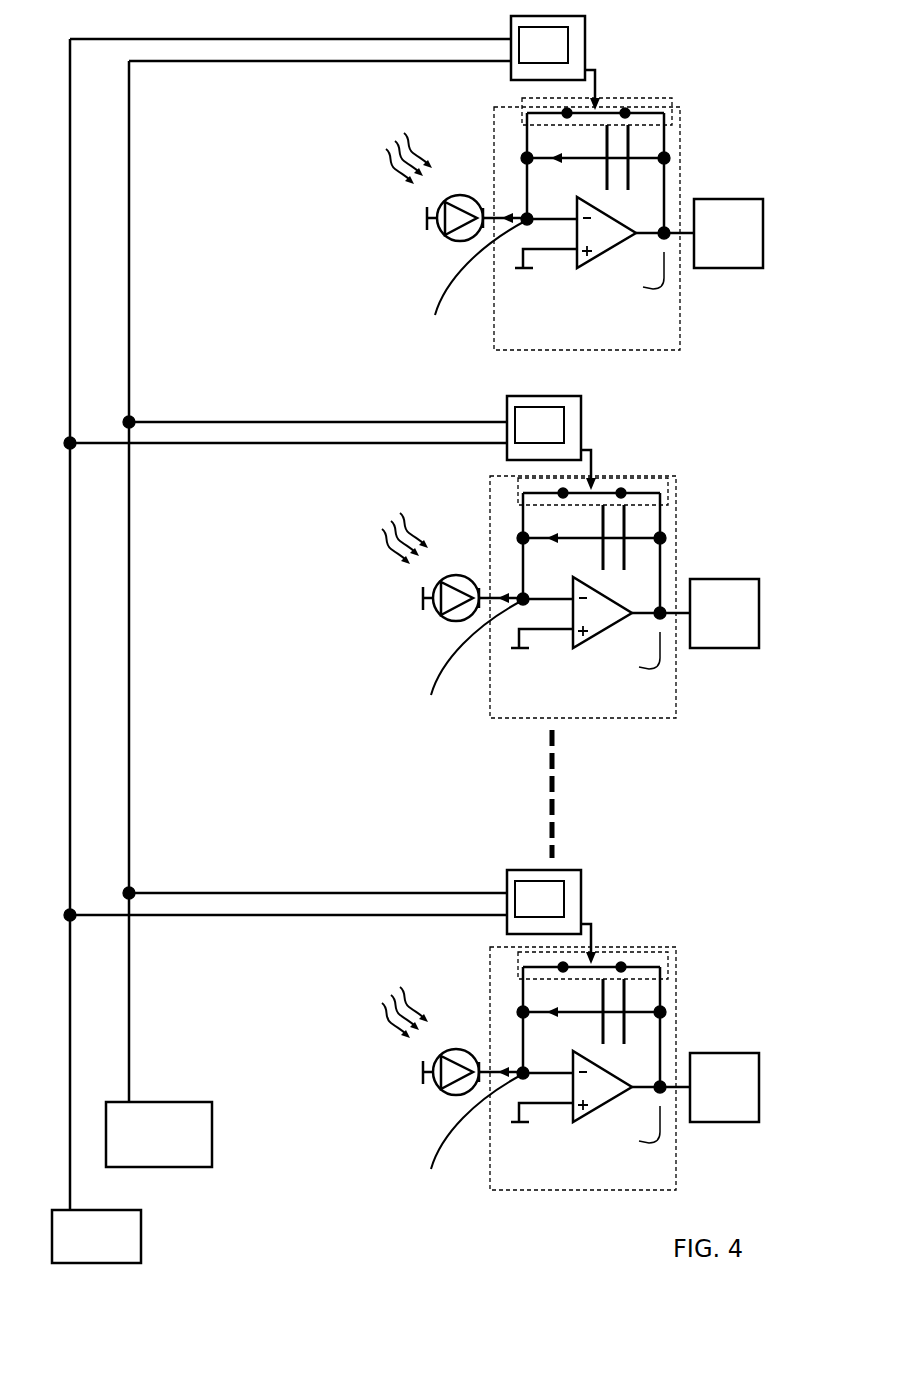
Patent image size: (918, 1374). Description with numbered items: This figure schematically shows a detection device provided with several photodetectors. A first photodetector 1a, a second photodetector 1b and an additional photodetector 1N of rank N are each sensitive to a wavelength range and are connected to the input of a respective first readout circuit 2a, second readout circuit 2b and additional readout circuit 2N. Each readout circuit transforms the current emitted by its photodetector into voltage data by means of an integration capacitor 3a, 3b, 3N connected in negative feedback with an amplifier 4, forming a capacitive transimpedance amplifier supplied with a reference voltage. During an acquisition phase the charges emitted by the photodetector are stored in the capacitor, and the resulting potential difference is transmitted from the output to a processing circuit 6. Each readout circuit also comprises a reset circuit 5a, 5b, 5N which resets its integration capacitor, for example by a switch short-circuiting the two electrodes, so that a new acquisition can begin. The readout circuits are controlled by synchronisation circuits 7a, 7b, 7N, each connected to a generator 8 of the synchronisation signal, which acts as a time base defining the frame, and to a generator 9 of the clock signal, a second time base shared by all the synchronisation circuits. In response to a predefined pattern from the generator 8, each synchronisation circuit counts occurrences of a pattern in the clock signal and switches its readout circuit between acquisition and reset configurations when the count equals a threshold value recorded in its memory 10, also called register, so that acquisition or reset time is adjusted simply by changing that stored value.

The first photodetector 1a is at (443, 237).
The second photodetector 1b is at (427, 625).
The additional photodetector 1N is at (427, 1099).
The first readout circuit 2a is at (680, 313).
The second readout circuit 2b is at (588, 600).
The additional readout circuit 2N is at (589, 1073).
The first integration capacitor 3a is at (630, 180).
The second integration capacitor 3b is at (689, 537).
The integration capacitor of rank N 3N is at (690, 1011).
The amplifier 4 is at (599, 262).
The reset circuit 5a is at (670, 117).
The reset circuit 5b is at (633, 490).
The reset circuit 5N is at (634, 964).
The processing circuit 6 is at (726, 660).
The first synchronisation circuit 7a is at (585, 53).
The second synchronisation circuit 7b is at (614, 443).
The synchronisation circuit of rank N 7N is at (615, 917).
The generator of synchronisation signal 8 is at (212, 1122).
The generator of clock signal 9 is at (141, 1230).
The memory 10 is at (541, 472).